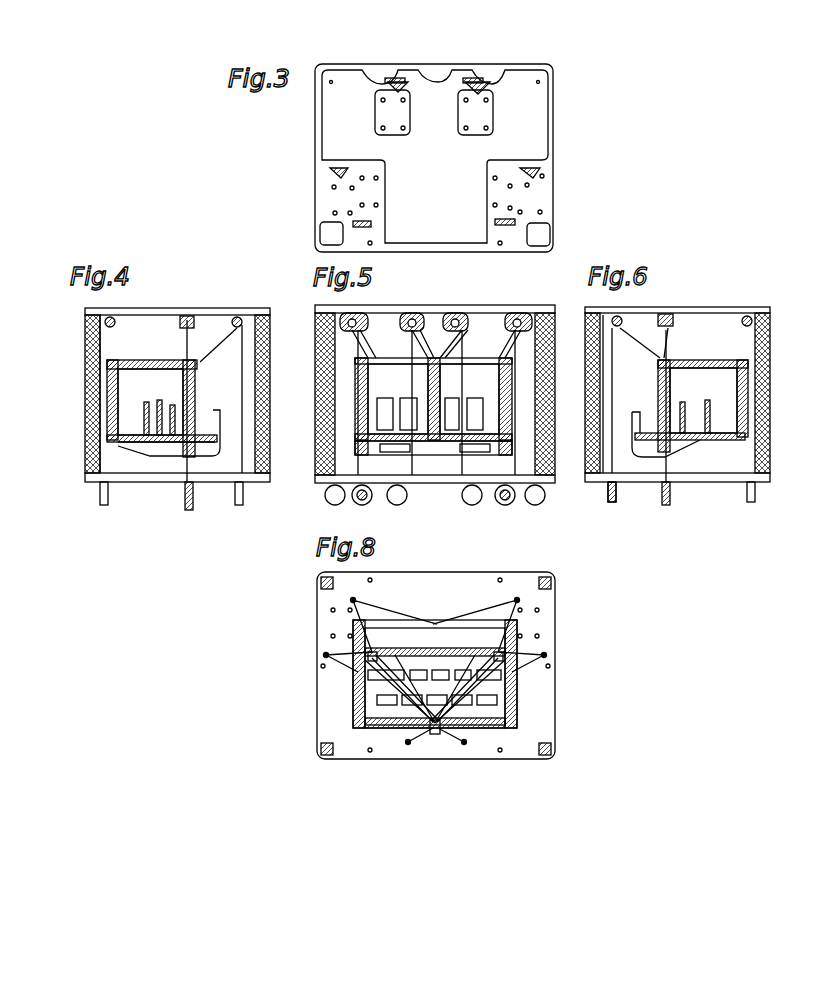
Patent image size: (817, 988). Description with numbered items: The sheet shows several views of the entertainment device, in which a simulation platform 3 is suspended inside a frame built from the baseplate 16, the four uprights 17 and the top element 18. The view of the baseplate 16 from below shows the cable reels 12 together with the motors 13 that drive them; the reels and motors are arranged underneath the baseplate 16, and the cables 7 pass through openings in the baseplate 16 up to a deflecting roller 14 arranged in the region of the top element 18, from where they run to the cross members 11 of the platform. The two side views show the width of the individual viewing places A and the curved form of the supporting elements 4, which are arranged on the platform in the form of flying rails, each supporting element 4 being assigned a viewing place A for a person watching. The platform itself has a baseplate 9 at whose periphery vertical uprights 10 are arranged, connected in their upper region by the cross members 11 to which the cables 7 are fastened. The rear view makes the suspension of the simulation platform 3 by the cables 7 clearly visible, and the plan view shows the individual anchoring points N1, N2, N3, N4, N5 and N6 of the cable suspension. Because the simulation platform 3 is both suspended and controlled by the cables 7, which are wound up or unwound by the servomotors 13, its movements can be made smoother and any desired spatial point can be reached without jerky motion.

In FIG. 4, the simulation platform 3 is at (180, 460).
In FIG. 8, the simulation platform 3 is at (518, 705).
In FIG. 4, the supporting element 4 is at (142, 420).
In FIG. 5, the supporting element 4 is at (478, 415).
In FIG. 6, the supporting element 4 is at (712, 400).
In FIG. 5, the cable 7 is at (510, 465).
In FIG. 6, the cable 7 is at (666, 352).
In FIG. 6, the baseplate 9 is at (672, 442).
In FIG. 4, the vertical upright 10 is at (200, 392).
In FIG. 4, the cross member 11 is at (147, 360).
In FIG. 8, the cross member 11 is at (356, 690).
In FIG. 3, the cable reel 12 is at (475, 82).
In FIG. 5, the cable reel 12 is at (470, 503).
In FIG. 6, the cable reel 12 is at (672, 495).
In FIG. 3, the motor 13 is at (492, 84).
In FIG. 5, the motor 13 is at (368, 502).
In FIG. 6, the motor 13 is at (660, 495).
In FIG. 5, the deflecting roller 14 is at (410, 318).
In FIG. 3, the baseplate 16 is at (530, 128).
In FIG. 4, the baseplate 16 is at (158, 482).
In FIG. 4, the upright 17 is at (90, 393).
In FIG. 6, the upright 17 is at (762, 432).
In FIG. 8, the upright 17 is at (552, 583).
In FIG. 4, the top element 18 is at (212, 312).
In FIG. 5, the top element 18 is at (485, 312).
In FIG. 6, the top element 18 is at (736, 310).
In FIG. 8, the top element 18 is at (540, 688).
In FIG. 4, the viewing place A is at (158, 420).
In FIG. 8, the anchoring point N1 is at (518, 598).
In FIG. 8, the anchoring point N2 is at (547, 655).
In FIG. 8, the anchoring point N3 is at (467, 742).
In FIG. 8, the anchoring point N4 is at (405, 742).
In FIG. 8, the anchoring point N5 is at (323, 655).
In FIG. 8, the anchoring point N6 is at (350, 601).